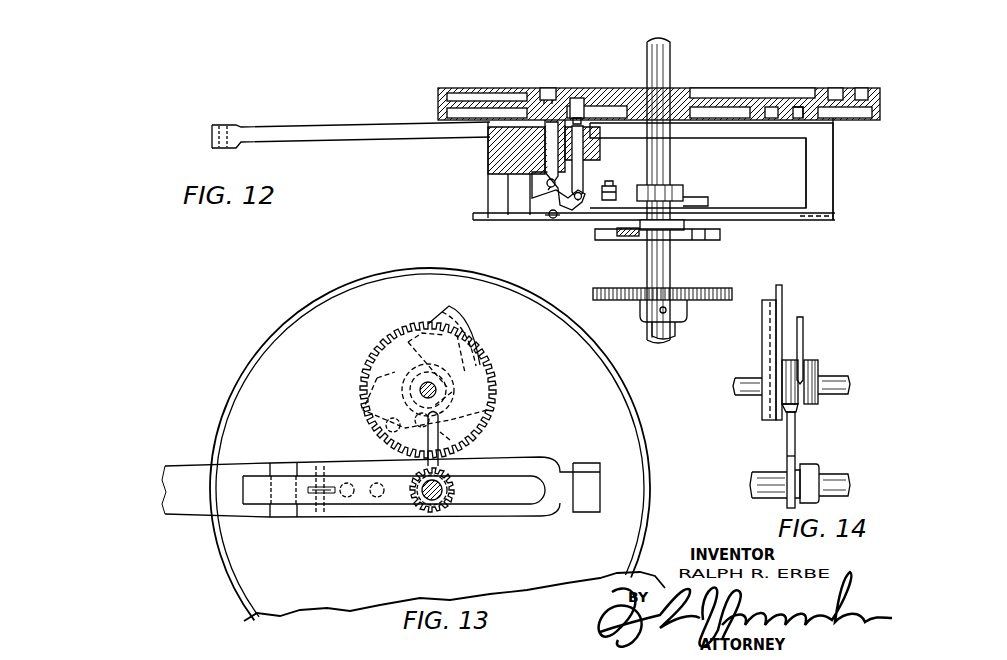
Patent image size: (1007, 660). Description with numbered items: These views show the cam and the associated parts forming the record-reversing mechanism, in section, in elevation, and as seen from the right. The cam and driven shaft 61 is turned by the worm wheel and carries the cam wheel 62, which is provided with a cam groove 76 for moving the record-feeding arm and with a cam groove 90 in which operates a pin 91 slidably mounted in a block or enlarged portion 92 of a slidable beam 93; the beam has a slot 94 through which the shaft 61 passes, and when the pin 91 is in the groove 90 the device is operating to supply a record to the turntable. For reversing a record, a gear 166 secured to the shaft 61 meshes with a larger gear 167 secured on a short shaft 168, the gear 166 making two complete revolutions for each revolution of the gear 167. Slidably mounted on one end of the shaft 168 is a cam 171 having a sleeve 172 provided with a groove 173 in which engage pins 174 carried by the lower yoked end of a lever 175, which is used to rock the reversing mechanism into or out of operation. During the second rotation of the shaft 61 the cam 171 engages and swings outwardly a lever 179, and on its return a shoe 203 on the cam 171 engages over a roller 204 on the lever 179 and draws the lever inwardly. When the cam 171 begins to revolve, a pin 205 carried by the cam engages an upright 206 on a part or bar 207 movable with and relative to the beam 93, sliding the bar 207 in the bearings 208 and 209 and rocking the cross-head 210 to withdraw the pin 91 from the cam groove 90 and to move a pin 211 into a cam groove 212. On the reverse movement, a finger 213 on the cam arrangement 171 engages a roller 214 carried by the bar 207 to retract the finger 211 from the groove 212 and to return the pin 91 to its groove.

In FIG. 12, the cam and driven shaft 61 is at (672, 64).
In FIG. 13, the cam and driven shaft 61 is at (420, 498).
In FIG. 14, the cam and driven shaft 61 is at (775, 470).
In FIG. 13, the cam wheel 62 is at (628, 392).
In FIG. 12, the cam groove 76 is at (546, 92).
In FIG. 12, the cam groove 90 is at (797, 110).
In FIG. 12, the pin 91 is at (548, 142).
In FIG. 12, the block or enlarged portion 92 is at (512, 162).
In FIG. 12, the slidable beam 93 is at (345, 150).
In FIG. 12, the slot 94 is at (738, 137).
In FIG. 13, the gear 166 is at (441, 510).
In FIG. 12, the larger gear 167 is at (734, 288).
In FIG. 13, the larger gear 167 is at (488, 360).
In FIG. 12, the short shaft 168 is at (662, 268).
In FIG. 13, the short shaft 168 is at (424, 386).
In FIG. 14, the short shaft 168 is at (746, 380).
In FIG. 12, the cam 171 is at (603, 234).
In FIG. 13, the cam 171 is at (456, 392).
In FIG. 14, the sleeve 172 is at (819, 364).
In FIG. 14, the groove 173 is at (800, 406).
In FIG. 14, the pins 174 is at (822, 388).
In FIG. 14, the lever 175 is at (803, 332).
In FIG. 13, the lever 179 is at (363, 412).
In FIG. 14, the lever 179 is at (782, 294).
In FIG. 13, the roller 204 is at (368, 438).
In FIG. 12, the shoe 203 is at (720, 236).
In FIG. 13, the shoe 203 is at (452, 312).
In FIG. 14, the shoe 203 is at (762, 319).
In FIG. 13, the pin 205 is at (488, 408).
In FIG. 14, the pin 205 is at (796, 416).
In FIG. 13, the upright 206 is at (452, 438).
In FIG. 14, the upright 206 is at (796, 448).
In FIG. 12, the bar 207 is at (786, 222).
In FIG. 13, the bar 207 is at (485, 473).
In FIG. 14, the bar 207 is at (787, 505).
In FIG. 12, the bearing 208 is at (820, 205).
In FIG. 12, the bearing 209 is at (508, 199).
In FIG. 12, the cross-head 210 is at (548, 201).
In FIG. 12, the pin 211 is at (584, 157).
In FIG. 12, the cam groove 212 is at (578, 100).
In FIG. 12, the finger 213 is at (700, 196).
In FIG. 12, the roller 214 is at (612, 194).